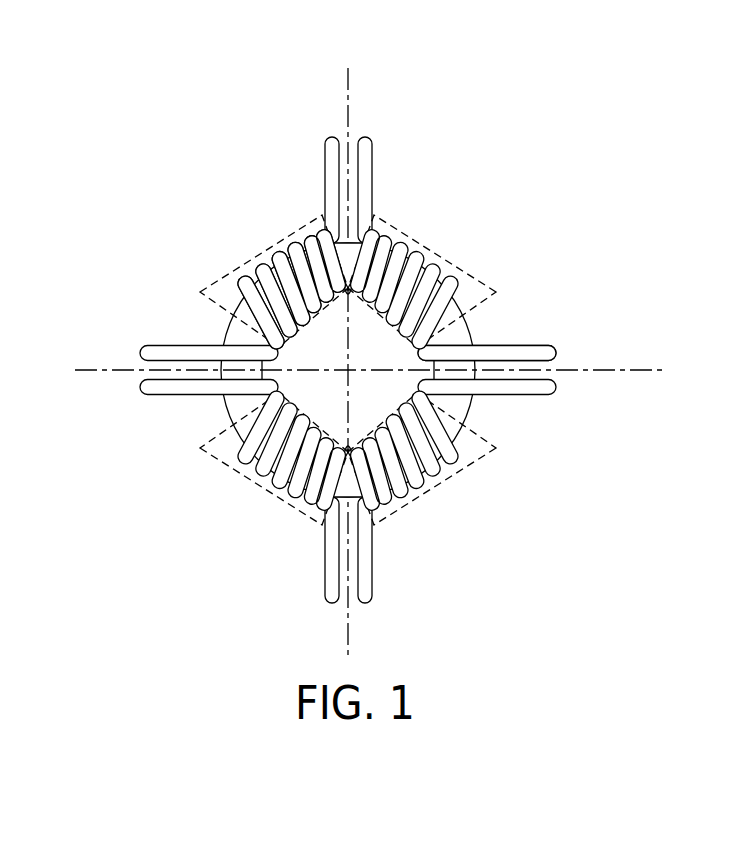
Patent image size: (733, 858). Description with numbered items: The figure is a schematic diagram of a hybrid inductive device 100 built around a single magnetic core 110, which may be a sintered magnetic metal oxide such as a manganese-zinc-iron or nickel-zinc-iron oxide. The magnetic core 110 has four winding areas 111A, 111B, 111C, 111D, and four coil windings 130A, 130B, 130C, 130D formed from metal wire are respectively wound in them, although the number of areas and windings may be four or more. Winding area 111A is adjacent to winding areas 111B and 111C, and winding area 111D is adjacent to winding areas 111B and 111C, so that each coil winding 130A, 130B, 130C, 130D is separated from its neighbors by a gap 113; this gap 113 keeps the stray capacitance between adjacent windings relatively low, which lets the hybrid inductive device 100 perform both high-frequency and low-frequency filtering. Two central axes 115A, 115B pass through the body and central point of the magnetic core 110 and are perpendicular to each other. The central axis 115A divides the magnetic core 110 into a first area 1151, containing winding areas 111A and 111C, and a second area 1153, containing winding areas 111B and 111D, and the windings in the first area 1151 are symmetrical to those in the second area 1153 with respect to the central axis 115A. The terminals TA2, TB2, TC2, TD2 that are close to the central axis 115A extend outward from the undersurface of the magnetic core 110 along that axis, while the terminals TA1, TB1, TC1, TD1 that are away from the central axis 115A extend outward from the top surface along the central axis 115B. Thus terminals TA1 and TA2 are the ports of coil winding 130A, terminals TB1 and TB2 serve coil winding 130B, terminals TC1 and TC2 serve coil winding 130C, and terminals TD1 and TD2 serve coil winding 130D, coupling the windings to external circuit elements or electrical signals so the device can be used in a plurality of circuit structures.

The hybrid inductive device 100 is at (351, 340).
The magnetic core 110 is at (470, 410).
The winding area 111A is at (237, 269).
The winding area 111B is at (459, 269).
The winding area 111C is at (237, 472).
The winding area 111D is at (459, 472).
The gap 113 is at (519, 352).
The central axis 115A is at (350, 95).
The central axis 115B is at (631, 367).
The first area 1151 is at (230, 110).
The second area 1153 is at (540, 110).
The coil winding 130A is at (284, 238).
The coil winding 130B is at (412, 238).
The coil winding 130C is at (284, 502).
The coil winding 130D is at (412, 502).
The terminal TA1 is at (182, 352).
The terminal TA2 is at (330, 202).
The terminal TB1 is at (515, 352).
The terminal TB2 is at (385, 177).
The terminal TC1 is at (182, 387).
The terminal TC2 is at (330, 541).
The terminal TD1 is at (515, 387).
The terminal TD2 is at (385, 566).